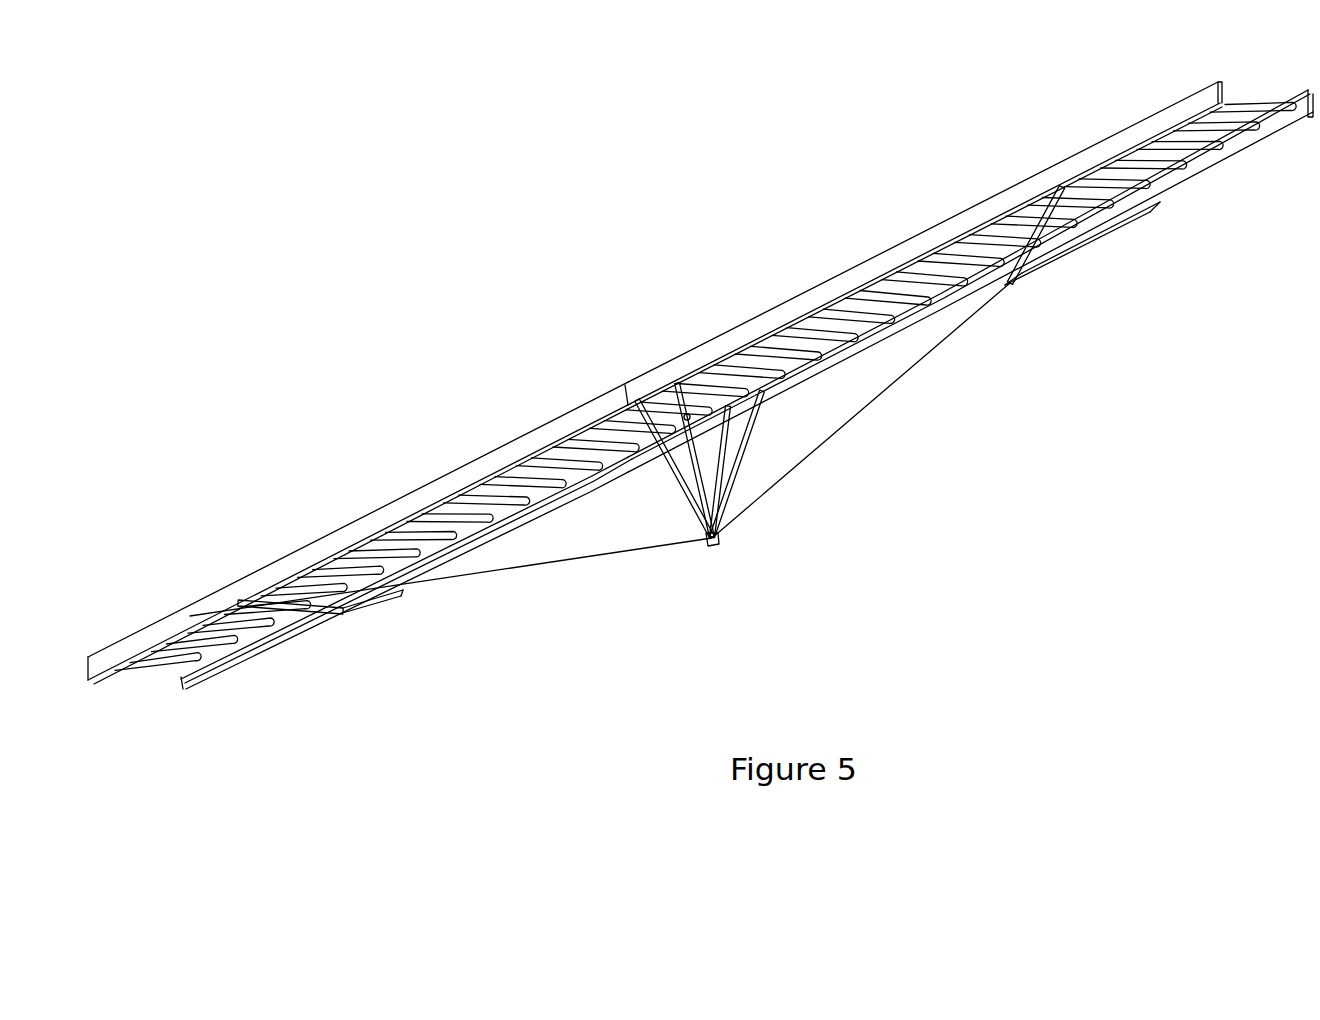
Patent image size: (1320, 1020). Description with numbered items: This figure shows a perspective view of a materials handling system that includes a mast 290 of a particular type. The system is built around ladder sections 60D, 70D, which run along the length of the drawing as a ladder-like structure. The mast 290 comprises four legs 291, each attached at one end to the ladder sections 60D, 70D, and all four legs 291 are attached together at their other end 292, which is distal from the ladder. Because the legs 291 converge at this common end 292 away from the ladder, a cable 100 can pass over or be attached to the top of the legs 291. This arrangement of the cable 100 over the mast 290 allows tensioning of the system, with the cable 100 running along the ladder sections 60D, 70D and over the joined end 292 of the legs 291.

The ladder section 60D is at (338, 474).
The ladder section 70D is at (908, 154).
The mast 290 is at (600, 471).
The legs 291 is at (758, 420).
The distal end 292 is at (715, 546).
The cable 100 is at (553, 568).